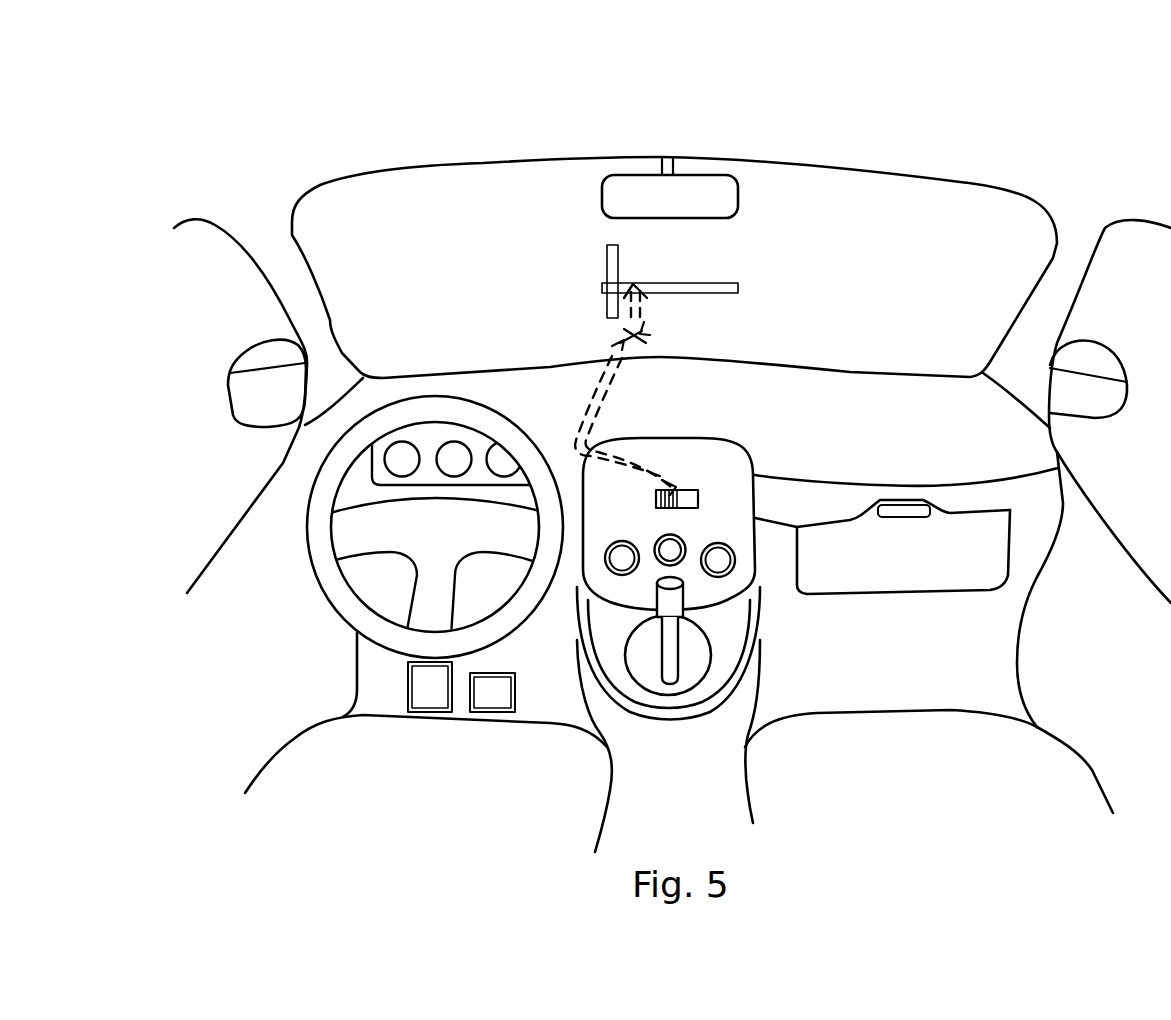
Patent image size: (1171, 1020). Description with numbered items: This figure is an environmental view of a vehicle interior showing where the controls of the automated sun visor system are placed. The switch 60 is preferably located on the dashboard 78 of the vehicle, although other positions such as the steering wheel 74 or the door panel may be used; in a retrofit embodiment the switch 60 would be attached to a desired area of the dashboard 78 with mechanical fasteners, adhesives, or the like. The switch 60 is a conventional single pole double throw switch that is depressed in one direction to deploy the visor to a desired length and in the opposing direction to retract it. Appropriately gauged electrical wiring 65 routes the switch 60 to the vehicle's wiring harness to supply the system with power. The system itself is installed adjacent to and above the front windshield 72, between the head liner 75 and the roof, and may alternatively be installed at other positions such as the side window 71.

The switch 60 is at (693, 492).
The electrical wiring 65 is at (597, 380).
The side window 71 is at (176, 251).
The front windshield 72 is at (487, 187).
The steering wheel 74 is at (317, 503).
The head liner 75 is at (328, 128).
The dashboard 78 is at (737, 473).